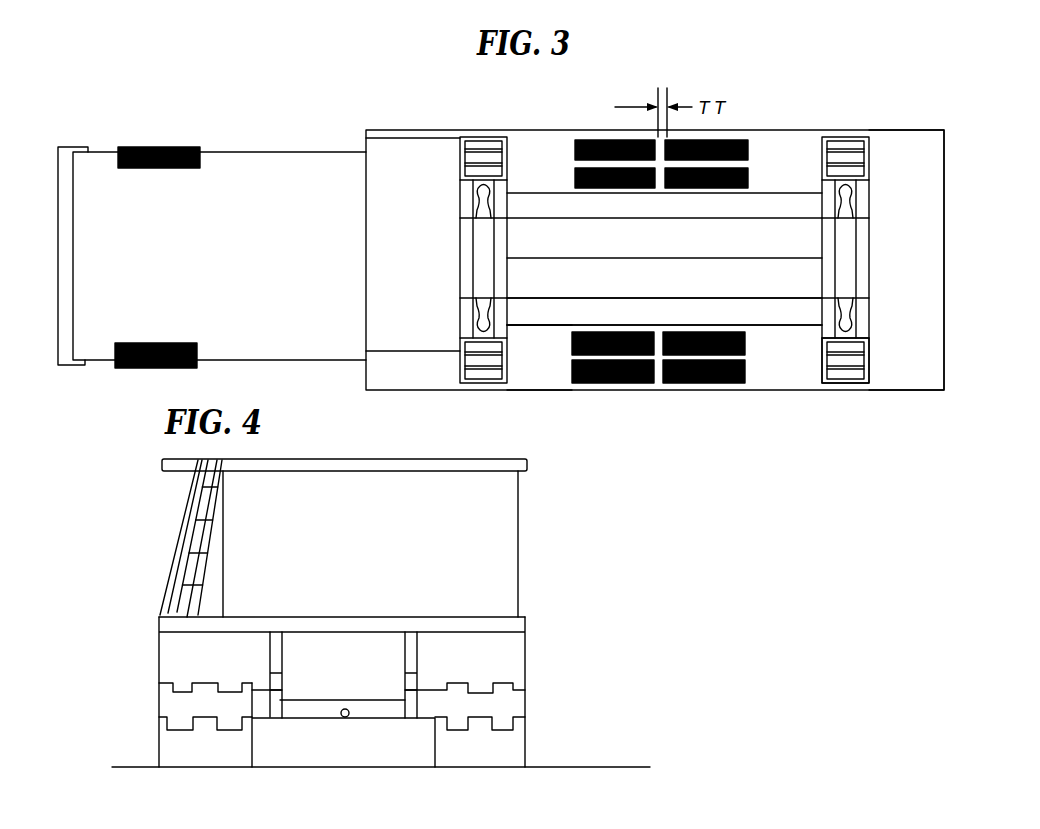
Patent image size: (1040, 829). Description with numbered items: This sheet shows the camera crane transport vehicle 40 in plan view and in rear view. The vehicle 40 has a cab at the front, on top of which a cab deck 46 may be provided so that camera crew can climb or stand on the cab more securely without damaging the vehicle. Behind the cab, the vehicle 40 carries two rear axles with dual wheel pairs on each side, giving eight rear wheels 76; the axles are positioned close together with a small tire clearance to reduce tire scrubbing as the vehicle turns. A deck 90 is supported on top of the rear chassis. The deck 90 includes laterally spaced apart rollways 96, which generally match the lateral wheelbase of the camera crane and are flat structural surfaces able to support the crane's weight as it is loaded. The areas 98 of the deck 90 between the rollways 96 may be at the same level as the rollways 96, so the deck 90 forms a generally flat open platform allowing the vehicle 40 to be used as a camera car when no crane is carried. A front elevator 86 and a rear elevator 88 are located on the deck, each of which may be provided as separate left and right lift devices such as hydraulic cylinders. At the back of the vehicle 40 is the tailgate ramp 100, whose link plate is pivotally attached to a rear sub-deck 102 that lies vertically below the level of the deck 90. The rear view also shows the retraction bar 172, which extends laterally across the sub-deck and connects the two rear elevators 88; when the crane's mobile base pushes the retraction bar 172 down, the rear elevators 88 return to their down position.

In FIG. 3, the camera crane transport vehicle 40 is at (770, 129).
In FIG. 4, the cab deck 46 is at (465, 458).
In FIG. 3, the rear wheels 76 is at (596, 382).
In FIG. 3, the front elevator 86 is at (484, 137).
In FIG. 3, the rear elevator 88 is at (832, 137).
In FIG. 3, the deck 90 is at (542, 362).
In FIG. 4, the deck 90 is at (482, 615).
In FIG. 3, the rollways 96 is at (537, 172).
In FIG. 3, the areas of the deck between the rollways 98 is at (780, 313).
In FIG. 3, the tailgate ramp 100 is at (930, 200).
In FIG. 4, the tailgate ramp 100 is at (512, 660).
In FIG. 3, the rear sub-deck 102 is at (868, 372).
In FIG. 4, the retraction bar 172 is at (303, 703).